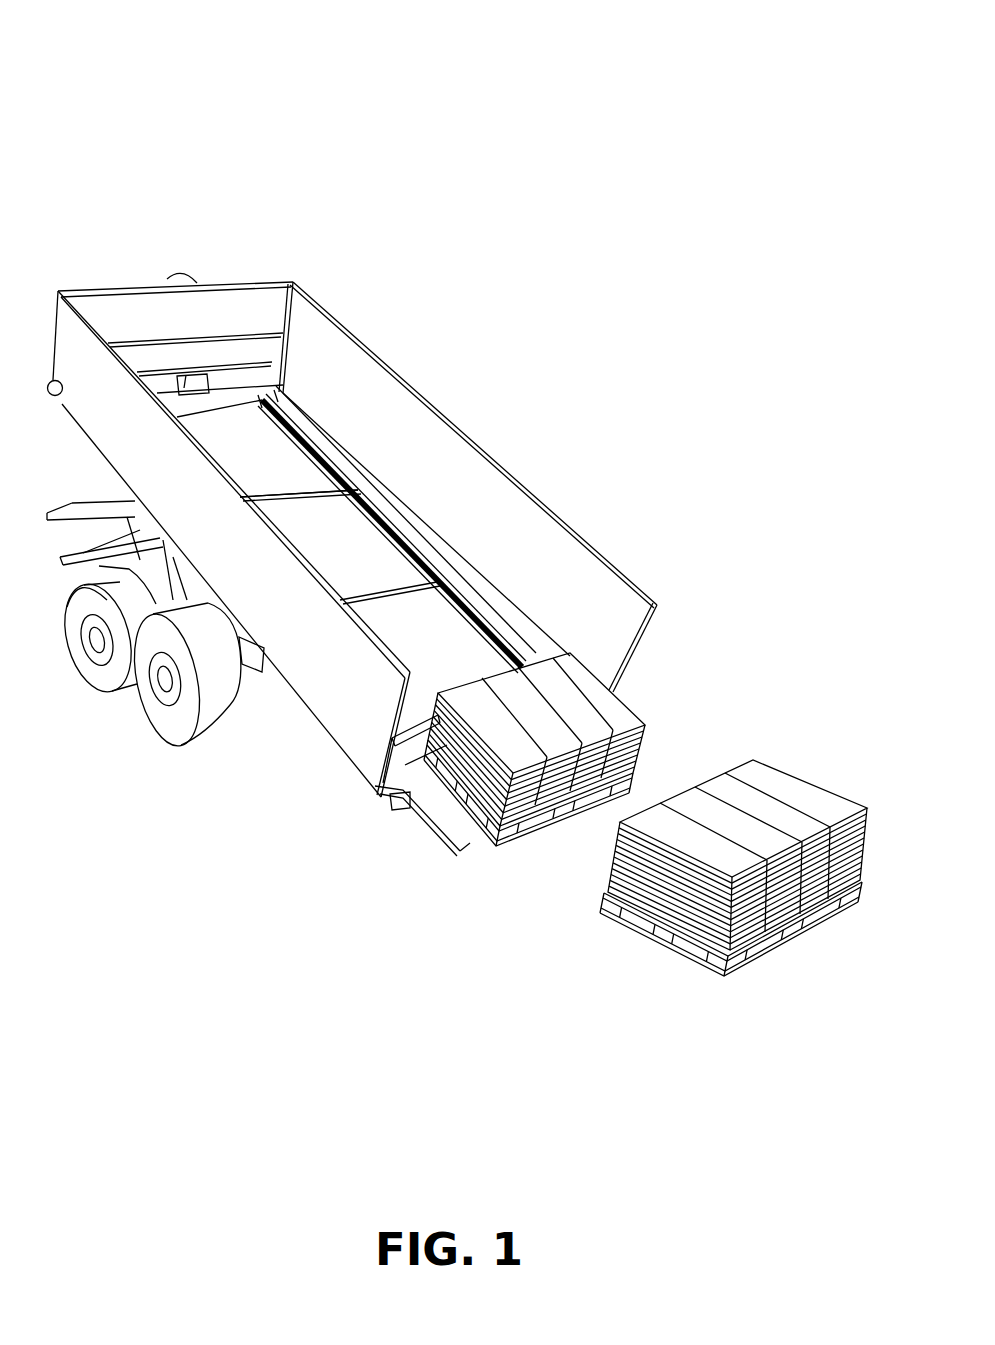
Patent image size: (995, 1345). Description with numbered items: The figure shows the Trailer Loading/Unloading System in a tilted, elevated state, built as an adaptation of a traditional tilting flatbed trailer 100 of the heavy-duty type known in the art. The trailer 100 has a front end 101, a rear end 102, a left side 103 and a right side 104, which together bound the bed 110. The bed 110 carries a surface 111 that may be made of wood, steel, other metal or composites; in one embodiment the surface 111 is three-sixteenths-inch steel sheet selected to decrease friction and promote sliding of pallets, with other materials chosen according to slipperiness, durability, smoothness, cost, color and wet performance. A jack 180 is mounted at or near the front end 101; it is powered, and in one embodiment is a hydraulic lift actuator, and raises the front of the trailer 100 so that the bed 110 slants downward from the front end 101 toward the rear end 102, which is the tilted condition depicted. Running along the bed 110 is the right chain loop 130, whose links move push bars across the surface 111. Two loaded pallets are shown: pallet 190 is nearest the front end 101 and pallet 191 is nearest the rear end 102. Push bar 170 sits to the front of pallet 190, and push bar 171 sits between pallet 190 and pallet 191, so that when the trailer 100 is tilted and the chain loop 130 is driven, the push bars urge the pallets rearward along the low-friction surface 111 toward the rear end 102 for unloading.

The tilting flatbed trailer 100 is at (121, 89).
The front end of tilting flatbed trailer 101 is at (118, 291).
The rear end of tilting flatbed trailer 102 is at (408, 830).
The left side of tilting flatbed trailer 103 is at (322, 747).
The right side of tilting flatbed trailer 104 is at (493, 450).
The bed of tilting flatbed trailer 110 is at (300, 463).
The surface of bed of tilting flatbed trailer 111 is at (258, 443).
The right chain loop 130 is at (383, 550).
The push bar 170 is at (363, 492).
The push bar 171 is at (418, 580).
The jack/lift 180 is at (146, 509).
The loaded pallet 190 is at (612, 717).
The loaded pallet 191 is at (643, 872).